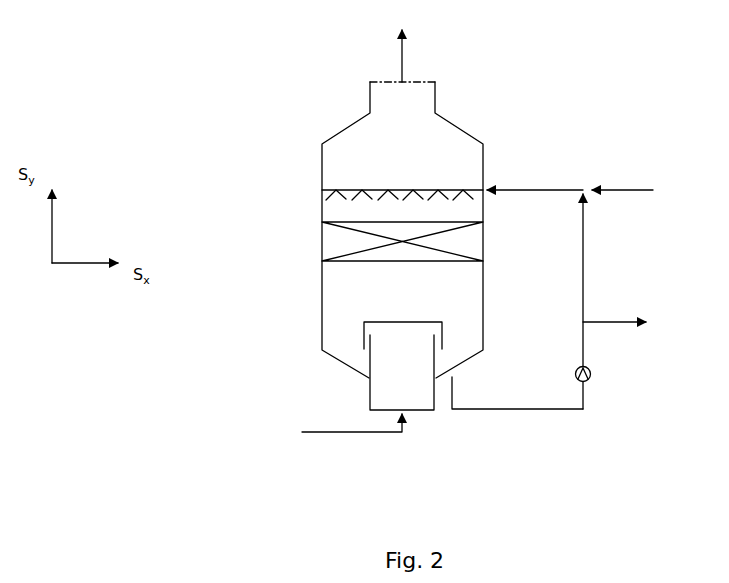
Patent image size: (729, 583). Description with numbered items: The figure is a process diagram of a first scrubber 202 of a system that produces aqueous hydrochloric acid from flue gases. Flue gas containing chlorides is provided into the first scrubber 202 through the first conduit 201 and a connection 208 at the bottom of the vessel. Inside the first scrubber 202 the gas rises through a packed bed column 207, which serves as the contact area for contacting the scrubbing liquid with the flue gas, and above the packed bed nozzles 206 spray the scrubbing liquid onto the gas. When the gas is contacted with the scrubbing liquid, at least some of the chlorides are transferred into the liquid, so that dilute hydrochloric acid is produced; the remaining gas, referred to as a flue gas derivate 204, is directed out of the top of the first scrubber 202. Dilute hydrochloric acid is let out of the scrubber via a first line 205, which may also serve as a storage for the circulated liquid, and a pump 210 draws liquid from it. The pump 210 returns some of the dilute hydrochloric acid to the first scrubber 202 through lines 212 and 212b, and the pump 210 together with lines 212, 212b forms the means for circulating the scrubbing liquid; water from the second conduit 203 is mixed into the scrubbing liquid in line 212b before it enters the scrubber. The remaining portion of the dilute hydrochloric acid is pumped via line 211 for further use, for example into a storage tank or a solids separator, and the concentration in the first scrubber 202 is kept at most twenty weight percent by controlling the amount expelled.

The first conduit 201 is at (355, 432).
The first scrubber 202 is at (322, 167).
The second conduit 203 is at (623, 190).
The flue gas derivate 204 is at (402, 73).
The first line 205 is at (487, 409).
The nozzles 206 is at (484, 192).
The packed bed column 207 is at (328, 243).
The connection 208 is at (370, 383).
The pump 210 is at (591, 374).
The line 211 is at (603, 322).
The line 212 is at (584, 245).
The line 212b is at (525, 190).